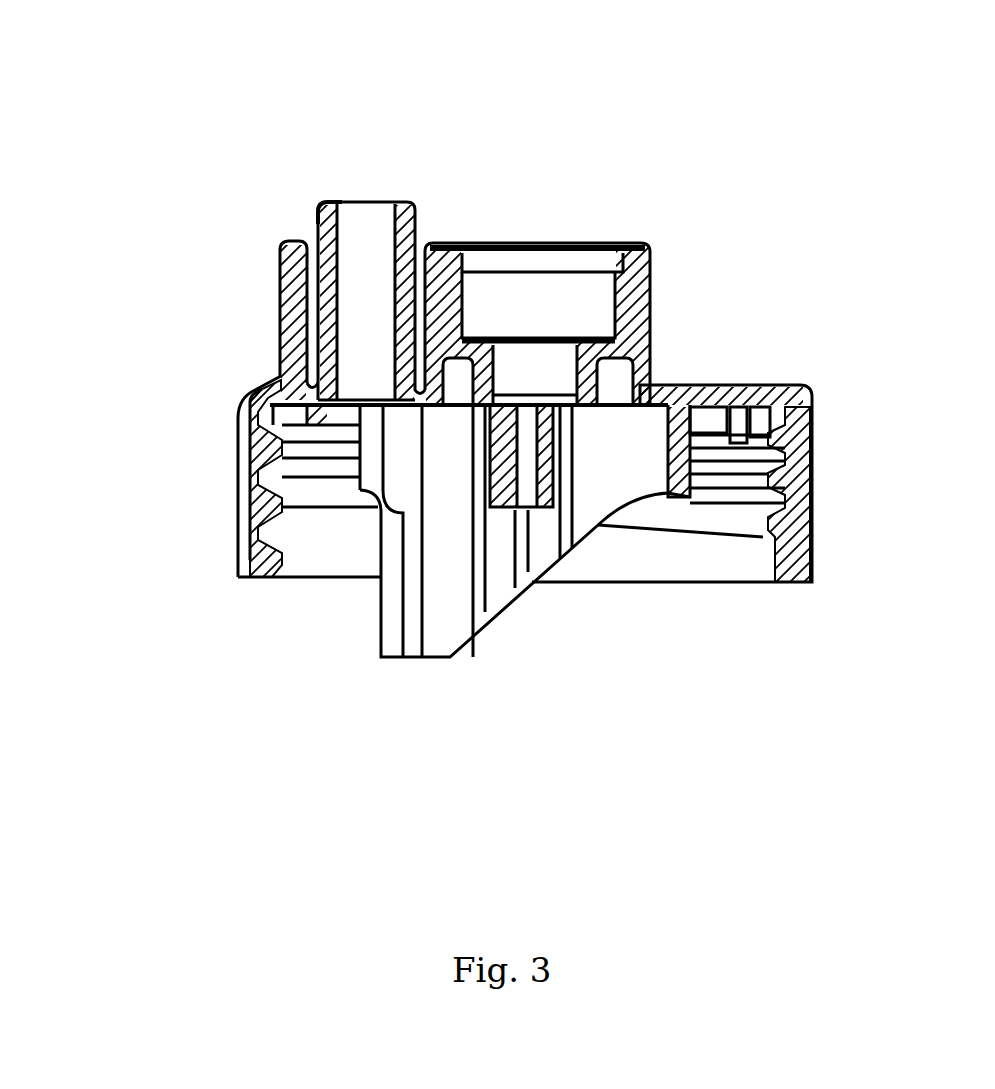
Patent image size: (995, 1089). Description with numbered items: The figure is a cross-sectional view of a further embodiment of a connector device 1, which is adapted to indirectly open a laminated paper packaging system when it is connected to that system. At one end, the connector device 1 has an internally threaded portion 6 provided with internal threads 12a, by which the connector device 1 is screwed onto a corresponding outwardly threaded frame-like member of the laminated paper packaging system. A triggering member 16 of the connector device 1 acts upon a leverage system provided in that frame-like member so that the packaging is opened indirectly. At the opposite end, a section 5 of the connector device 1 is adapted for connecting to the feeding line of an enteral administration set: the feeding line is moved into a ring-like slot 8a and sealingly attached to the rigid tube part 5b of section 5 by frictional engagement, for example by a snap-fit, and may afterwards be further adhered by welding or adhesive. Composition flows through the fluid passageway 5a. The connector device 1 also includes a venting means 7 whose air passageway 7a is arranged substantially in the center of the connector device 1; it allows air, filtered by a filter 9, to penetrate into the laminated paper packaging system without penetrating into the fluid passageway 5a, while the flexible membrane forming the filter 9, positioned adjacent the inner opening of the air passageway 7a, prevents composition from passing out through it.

The connector device 1 is at (222, 489).
The section 5 is at (293, 303).
The fluid passageway 5a is at (358, 240).
The rigid tube part 5b is at (330, 200).
The internally threaded portion 6 is at (720, 557).
The venting means 7 is at (605, 242).
The air passageway 7a is at (527, 423).
The ring-like slot 8a is at (303, 240).
The filter 9 is at (562, 262).
The internal threads 12a is at (297, 558).
The triggering member 16 is at (445, 625).